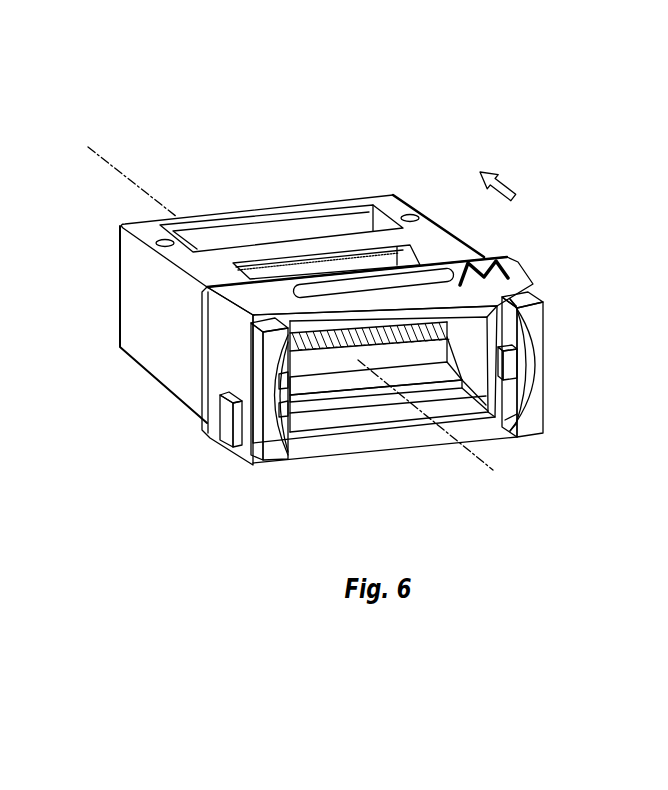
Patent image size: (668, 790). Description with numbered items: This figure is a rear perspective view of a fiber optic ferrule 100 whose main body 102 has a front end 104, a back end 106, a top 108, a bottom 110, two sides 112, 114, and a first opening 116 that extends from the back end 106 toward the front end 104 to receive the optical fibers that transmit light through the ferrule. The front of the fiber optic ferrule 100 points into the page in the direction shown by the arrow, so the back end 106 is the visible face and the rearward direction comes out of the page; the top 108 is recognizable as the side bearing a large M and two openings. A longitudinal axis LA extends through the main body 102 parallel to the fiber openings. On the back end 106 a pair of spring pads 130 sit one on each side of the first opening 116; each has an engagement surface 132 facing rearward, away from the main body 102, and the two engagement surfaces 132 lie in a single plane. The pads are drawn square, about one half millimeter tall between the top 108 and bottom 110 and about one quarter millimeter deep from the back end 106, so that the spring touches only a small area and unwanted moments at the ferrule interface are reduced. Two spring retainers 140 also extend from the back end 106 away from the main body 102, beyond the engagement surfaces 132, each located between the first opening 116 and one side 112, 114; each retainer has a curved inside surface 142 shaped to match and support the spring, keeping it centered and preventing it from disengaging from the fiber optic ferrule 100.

The fiber optic ferrule 100 is at (361, 121).
The main body 102 is at (242, 448).
The front end 104 is at (119, 229).
The back end 106 is at (346, 466).
The top 108 is at (433, 234).
The bottom 110 is at (170, 389).
The side 112 is at (185, 333).
The side 114 is at (484, 252).
The first opening 116 is at (376, 403).
The spring pads 130 is at (282, 399).
The engagement surface 132 is at (515, 358).
The spring retainers 140 is at (262, 345).
The inside surface 142 is at (515, 397).
The longitudinal axis LA is at (290, 317).